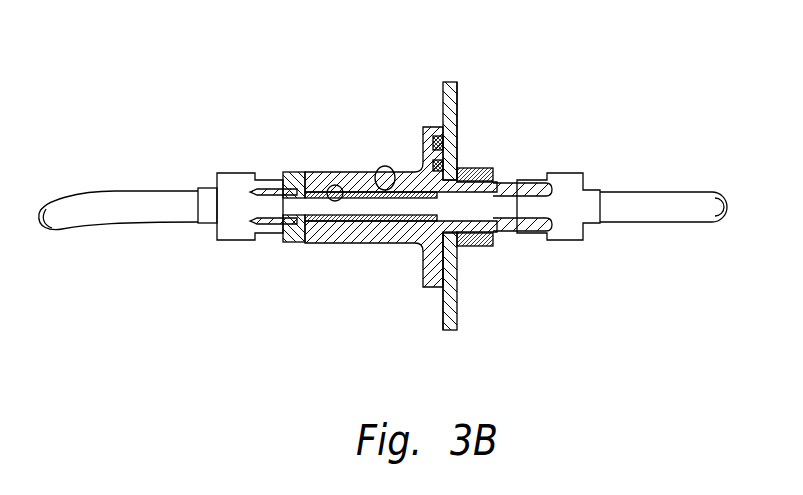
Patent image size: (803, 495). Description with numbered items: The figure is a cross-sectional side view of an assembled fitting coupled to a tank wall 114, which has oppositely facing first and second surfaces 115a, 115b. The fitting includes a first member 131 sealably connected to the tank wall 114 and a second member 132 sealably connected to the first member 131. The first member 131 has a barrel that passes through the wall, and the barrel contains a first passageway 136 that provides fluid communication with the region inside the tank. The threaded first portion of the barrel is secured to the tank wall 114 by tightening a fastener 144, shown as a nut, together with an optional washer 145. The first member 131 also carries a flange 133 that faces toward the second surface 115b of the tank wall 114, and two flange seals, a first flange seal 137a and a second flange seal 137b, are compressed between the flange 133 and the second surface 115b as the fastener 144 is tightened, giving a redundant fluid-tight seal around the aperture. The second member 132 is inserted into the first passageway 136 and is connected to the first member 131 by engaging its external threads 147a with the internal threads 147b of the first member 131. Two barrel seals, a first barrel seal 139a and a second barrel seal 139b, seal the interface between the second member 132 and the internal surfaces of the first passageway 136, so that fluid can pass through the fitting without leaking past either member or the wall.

The first member 131 is at (415, 172).
The second member 132 is at (364, 244).
The flange 133 is at (443, 100).
The tank wall 114 is at (449, 332).
The first surface 115a is at (457, 98).
The second surface 115b is at (441, 318).
The first flange seal 137a is at (428, 160).
The second flange seal 137b is at (436, 134).
The first barrel seal 139a is at (304, 172).
The second barrel seal 139b is at (376, 168).
The washer 145 is at (462, 168).
The external threads 147a is at (322, 246).
The internal threads 147b is at (331, 186).
The first passageway 136 is at (496, 214).
The fastener 144 is at (577, 173).